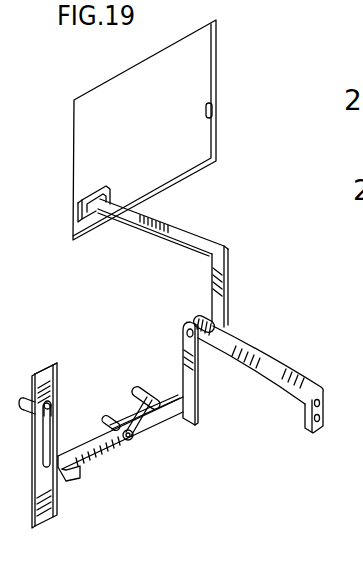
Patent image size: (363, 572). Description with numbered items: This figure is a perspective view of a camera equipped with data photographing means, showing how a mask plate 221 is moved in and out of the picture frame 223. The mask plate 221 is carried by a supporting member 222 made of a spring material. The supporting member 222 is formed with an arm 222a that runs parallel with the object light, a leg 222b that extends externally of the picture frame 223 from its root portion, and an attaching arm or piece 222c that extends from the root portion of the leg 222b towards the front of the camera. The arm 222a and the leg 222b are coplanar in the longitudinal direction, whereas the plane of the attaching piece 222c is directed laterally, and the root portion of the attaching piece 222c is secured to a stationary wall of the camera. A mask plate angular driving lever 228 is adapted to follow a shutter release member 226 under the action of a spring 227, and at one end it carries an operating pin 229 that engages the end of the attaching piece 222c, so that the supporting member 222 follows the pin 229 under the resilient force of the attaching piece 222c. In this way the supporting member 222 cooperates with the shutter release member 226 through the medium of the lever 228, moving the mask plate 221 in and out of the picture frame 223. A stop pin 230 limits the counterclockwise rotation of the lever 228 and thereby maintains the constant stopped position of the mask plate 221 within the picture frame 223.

The mask plate 221 is at (90, 193).
The supporting member 222 is at (221, 314).
The arm 222a is at (167, 218).
The leg 222b is at (228, 283).
The attaching arm or piece 222c is at (266, 363).
The picture frame 223 is at (214, 117).
The shutter release member 226 is at (52, 383).
The spring 227 is at (157, 418).
The mask plate angular driving lever 228 is at (108, 453).
The operating pin 229 is at (214, 338).
The stop pin 230 is at (143, 386).